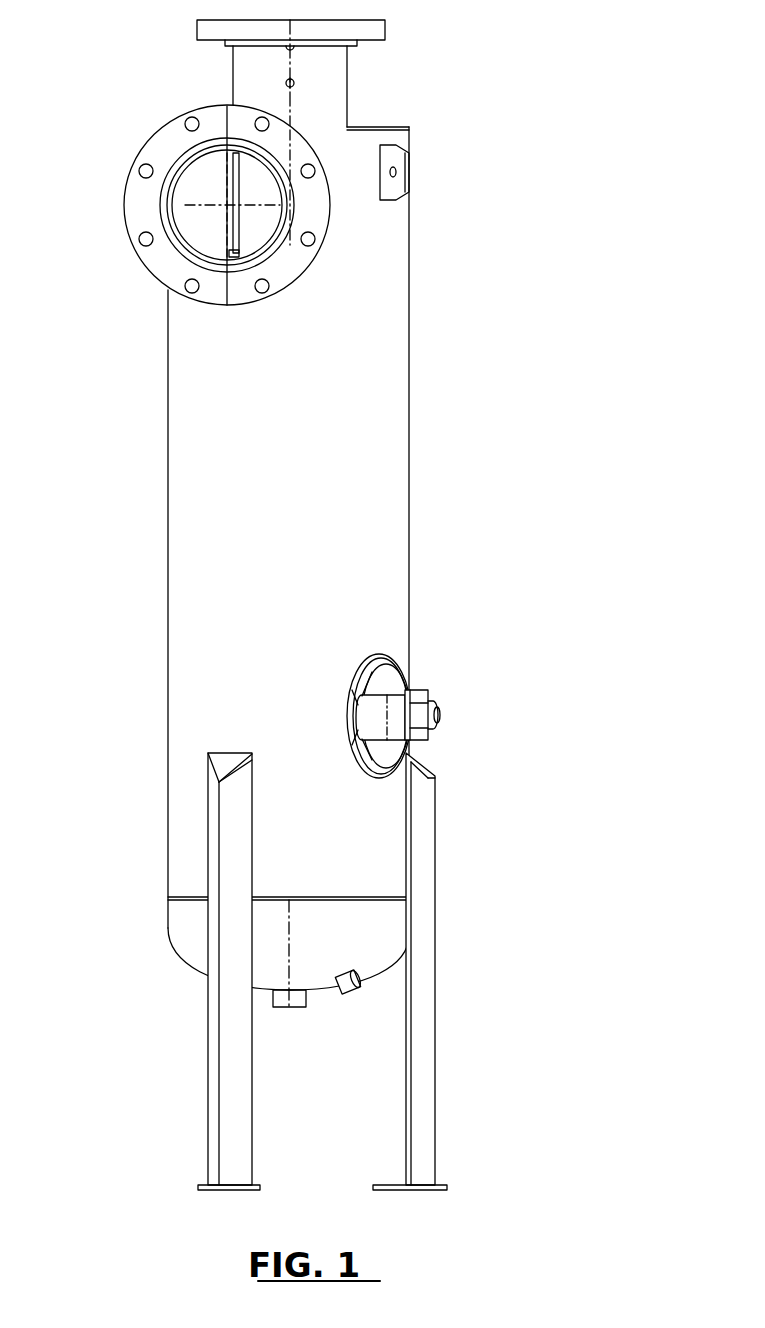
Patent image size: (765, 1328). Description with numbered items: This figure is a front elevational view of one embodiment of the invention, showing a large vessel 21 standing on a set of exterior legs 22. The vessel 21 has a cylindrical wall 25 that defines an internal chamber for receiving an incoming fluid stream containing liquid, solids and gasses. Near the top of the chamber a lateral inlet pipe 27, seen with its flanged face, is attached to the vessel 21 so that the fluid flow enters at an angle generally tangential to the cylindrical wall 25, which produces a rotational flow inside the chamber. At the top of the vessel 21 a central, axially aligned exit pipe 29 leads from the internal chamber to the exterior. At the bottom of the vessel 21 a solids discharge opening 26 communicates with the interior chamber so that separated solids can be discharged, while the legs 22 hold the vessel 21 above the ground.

The vessel 21 is at (288, 605).
The exterior legs 22 is at (428, 1037).
The cylindrical wall 25 is at (377, 353).
The solids discharge opening 26 is at (297, 1007).
The lateral inlet pipe 27 is at (150, 195).
The exit pipe 29 is at (332, 90).